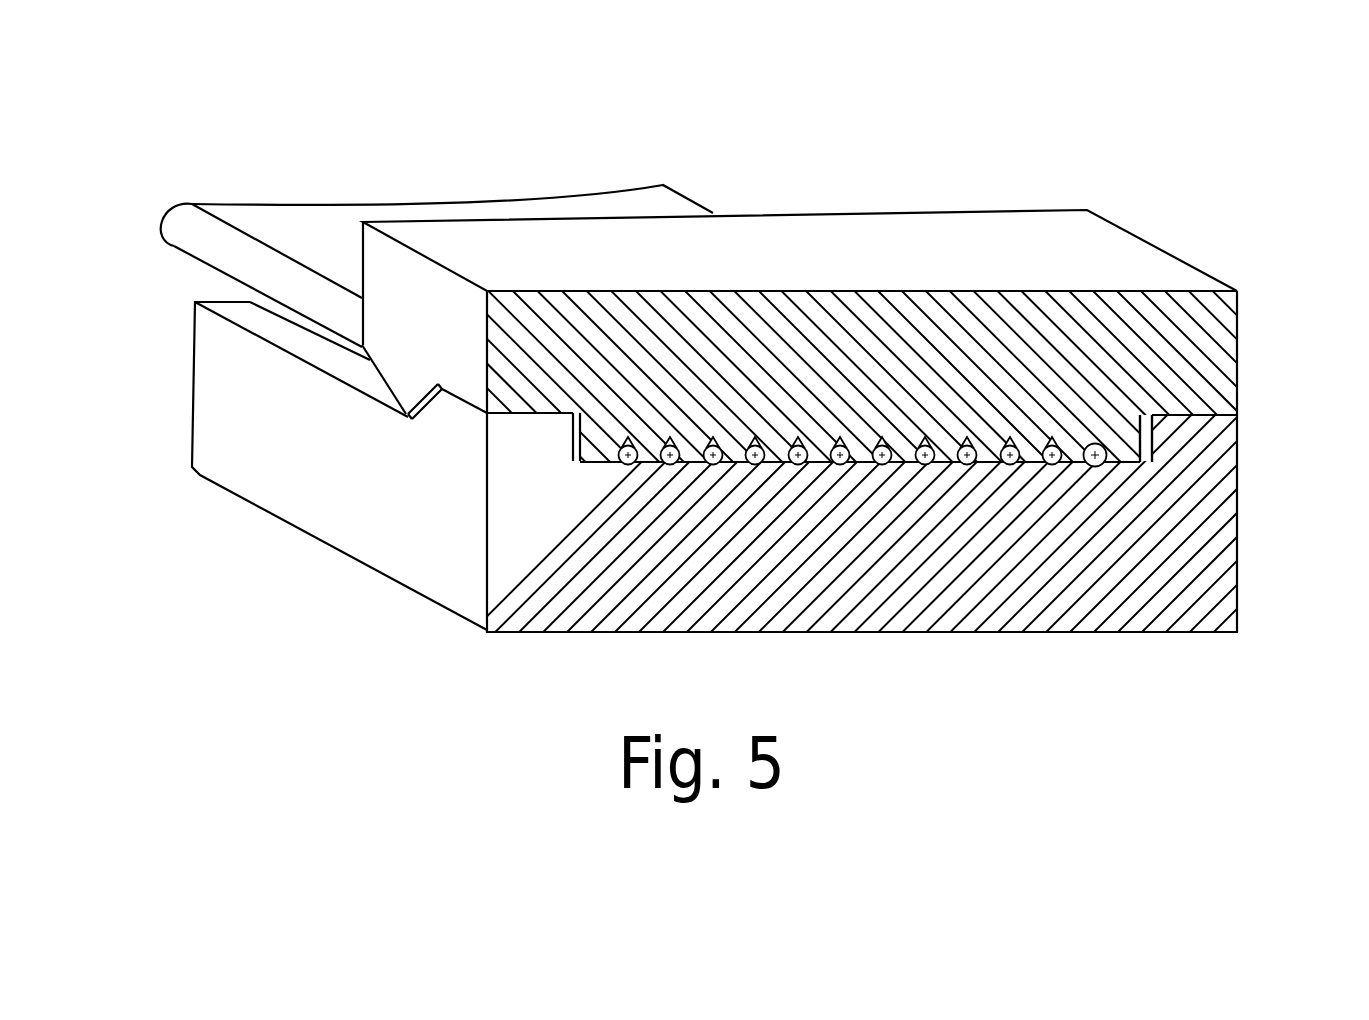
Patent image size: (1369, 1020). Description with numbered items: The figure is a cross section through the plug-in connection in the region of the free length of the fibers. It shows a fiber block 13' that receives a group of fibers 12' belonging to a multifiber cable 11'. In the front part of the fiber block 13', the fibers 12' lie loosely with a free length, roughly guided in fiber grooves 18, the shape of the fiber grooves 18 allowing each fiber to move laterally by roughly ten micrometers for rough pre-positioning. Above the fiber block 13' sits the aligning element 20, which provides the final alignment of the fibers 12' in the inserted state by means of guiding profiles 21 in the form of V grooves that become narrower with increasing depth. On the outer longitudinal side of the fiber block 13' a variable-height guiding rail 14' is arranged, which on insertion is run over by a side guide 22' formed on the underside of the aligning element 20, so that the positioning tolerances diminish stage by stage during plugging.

The multifiber cable 11' is at (437, 207).
The side guide 22' is at (240, 350).
The variable-height guiding rail 14' is at (263, 461).
The fiber block 13' is at (339, 466).
The aligning element 20 is at (905, 232).
The guiding profile 21 is at (1120, 431).
The fiber 12' is at (994, 445).
The fiber groove 18 is at (1118, 474).